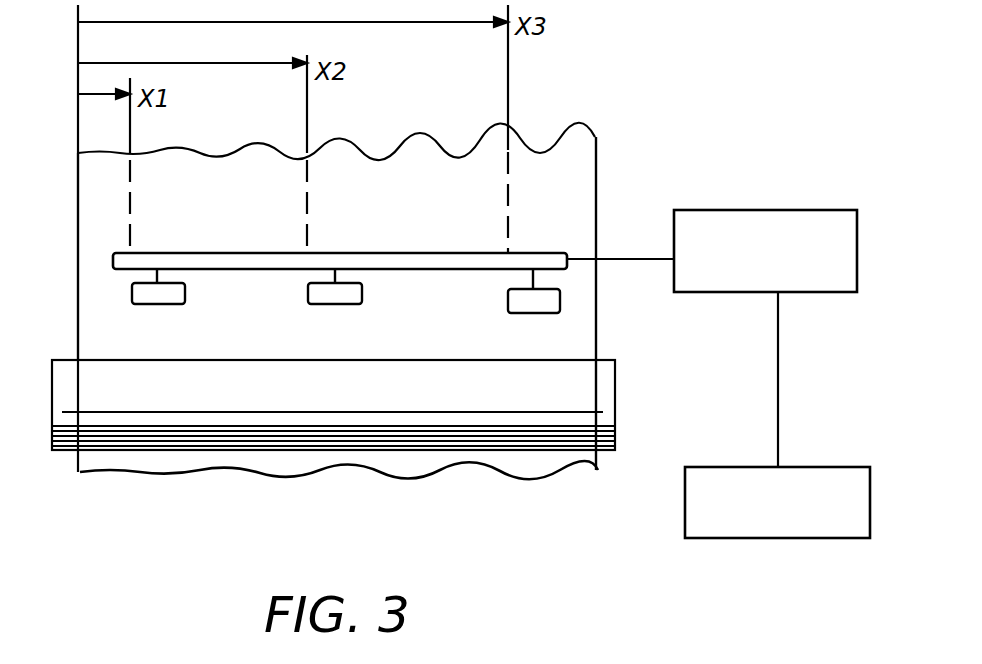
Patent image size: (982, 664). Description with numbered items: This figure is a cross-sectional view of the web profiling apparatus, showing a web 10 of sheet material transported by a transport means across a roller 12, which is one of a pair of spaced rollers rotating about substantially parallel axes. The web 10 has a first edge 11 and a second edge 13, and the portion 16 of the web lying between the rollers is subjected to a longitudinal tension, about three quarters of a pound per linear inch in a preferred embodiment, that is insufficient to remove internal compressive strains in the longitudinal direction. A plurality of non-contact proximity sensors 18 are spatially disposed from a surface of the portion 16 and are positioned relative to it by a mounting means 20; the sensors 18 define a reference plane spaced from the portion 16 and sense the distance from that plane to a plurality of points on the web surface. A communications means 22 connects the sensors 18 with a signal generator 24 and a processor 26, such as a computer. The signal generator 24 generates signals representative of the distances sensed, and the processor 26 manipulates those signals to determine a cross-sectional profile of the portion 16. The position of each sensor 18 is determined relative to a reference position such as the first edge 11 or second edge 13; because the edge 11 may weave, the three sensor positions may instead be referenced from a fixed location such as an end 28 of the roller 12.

The web 10 is at (597, 165).
The first edge 11 is at (78, 320).
The roller 12 is at (590, 388).
The second edge 13 is at (598, 333).
The portion 16 is at (525, 472).
The non-contact proximity sensors 18 is at (350, 304).
The mounting means 20 is at (538, 253).
The communications means 22 is at (627, 259).
The signal generator 24 is at (742, 210).
The processor 26 is at (755, 538).
The end of roller 28 is at (52, 420).